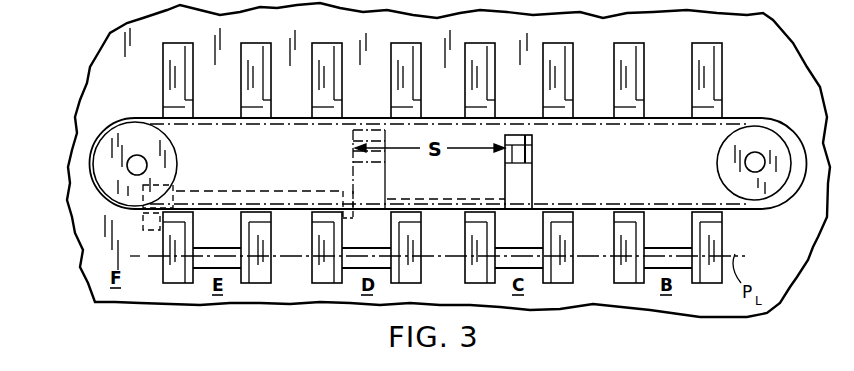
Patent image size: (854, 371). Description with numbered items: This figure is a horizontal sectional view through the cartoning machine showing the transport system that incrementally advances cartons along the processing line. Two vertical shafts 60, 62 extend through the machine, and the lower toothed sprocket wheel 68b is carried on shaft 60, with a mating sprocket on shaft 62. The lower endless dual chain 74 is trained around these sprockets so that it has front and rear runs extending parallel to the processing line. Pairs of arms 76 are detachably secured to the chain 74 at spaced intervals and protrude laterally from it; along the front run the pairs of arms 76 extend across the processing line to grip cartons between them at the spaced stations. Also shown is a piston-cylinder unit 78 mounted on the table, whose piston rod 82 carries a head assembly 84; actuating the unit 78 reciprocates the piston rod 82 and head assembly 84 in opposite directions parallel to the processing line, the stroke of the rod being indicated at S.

The shaft 60 is at (147, 165).
The shaft 62 is at (745, 163).
The lower toothed sprocket wheel 68b is at (113, 184).
The lower endless dual chain 74 is at (643, 203).
The arms 76 is at (323, 59).
The piston-cylinder unit 78 is at (283, 195).
The piston rod 82 is at (441, 196).
The head assembly 84 is at (531, 182).